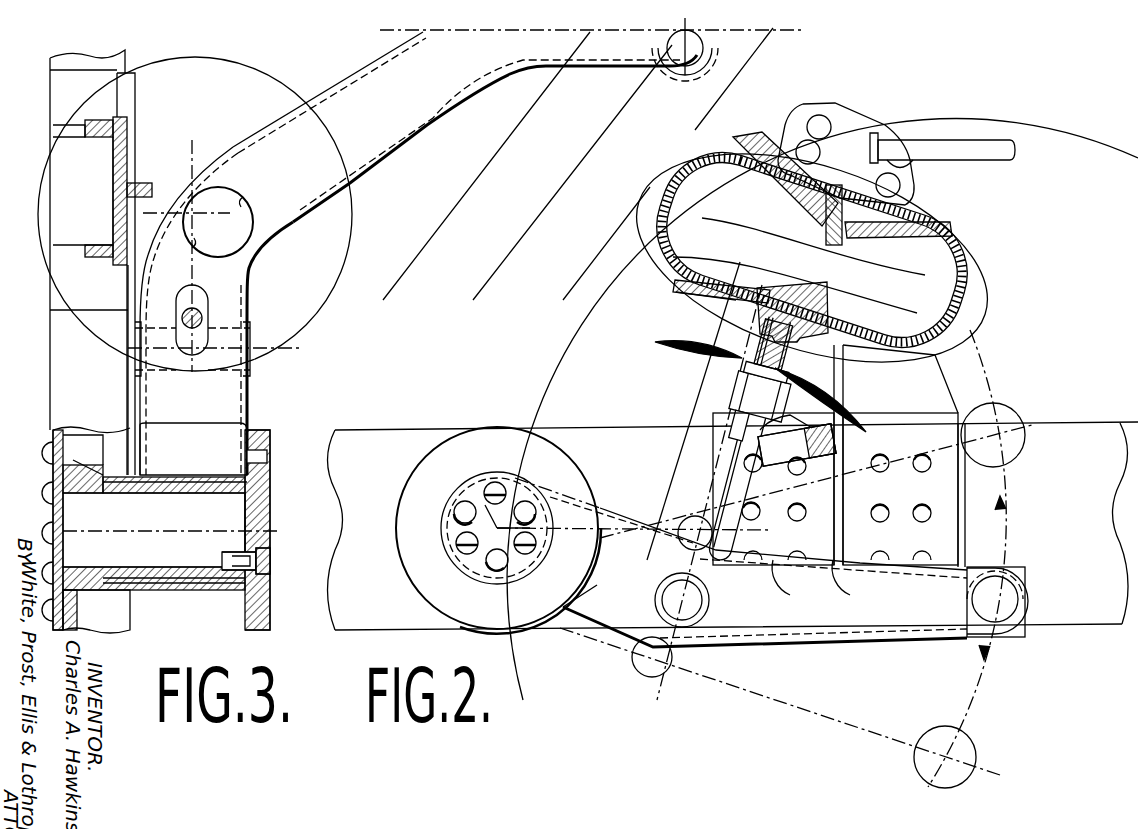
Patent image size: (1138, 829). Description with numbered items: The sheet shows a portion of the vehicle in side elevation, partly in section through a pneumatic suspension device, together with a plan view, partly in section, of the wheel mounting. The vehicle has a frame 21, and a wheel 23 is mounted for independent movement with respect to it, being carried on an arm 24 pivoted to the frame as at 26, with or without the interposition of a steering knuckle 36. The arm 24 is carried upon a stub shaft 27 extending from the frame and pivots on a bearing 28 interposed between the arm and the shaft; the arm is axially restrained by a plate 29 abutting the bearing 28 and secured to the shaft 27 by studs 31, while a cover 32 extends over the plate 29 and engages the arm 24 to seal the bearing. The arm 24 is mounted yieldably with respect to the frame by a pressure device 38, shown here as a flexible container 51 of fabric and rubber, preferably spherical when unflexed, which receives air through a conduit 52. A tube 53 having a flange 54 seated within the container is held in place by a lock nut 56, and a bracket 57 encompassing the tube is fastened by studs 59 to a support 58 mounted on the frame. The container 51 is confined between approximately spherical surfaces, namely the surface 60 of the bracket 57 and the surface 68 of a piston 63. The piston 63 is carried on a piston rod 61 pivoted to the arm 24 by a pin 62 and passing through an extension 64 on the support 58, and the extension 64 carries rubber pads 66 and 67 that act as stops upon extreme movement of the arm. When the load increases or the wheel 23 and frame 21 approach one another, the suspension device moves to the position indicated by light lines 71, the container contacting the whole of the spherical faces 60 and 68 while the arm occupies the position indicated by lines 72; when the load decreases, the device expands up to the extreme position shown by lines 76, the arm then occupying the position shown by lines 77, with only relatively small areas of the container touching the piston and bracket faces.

In FIG. 3, the frame 21 is at (55, 360).
In FIG. 2, the frame 21 is at (1085, 424).
In FIG. 2, the wheels 23 is at (414, 262).
In FIG. 2, the arms 24 is at (398, 128).
In FIG. 3, the pivot 26 is at (137, 592).
In FIG. 2, the pivot 26 is at (410, 585).
In FIG. 3, the stub shaft 27 is at (152, 570).
In FIG. 3, the bearing 28 is at (218, 592).
In FIG. 3, the plate 29 is at (245, 522).
In FIG. 3, the studs 31 is at (270, 560).
In FIG. 3, the cover 32 is at (268, 460).
In FIG. 2, the cover 32 is at (415, 512).
In FIG. 2, the steering knuckles 36 is at (1012, 568).
In FIG. 3, the pressure devices 38 is at (274, 59).
In FIG. 2, the pressure devices 38 is at (1018, 336).
In FIG. 2, the pressure device 51 is at (972, 240).
In FIG. 2, the conduit 52 is at (1000, 160).
In FIG. 2, the tube 53 is at (805, 214).
In FIG. 2, the flange 54 is at (842, 236).
In FIG. 2, the lock nut 56 is at (863, 183).
In FIG. 2, the bracket 57 is at (810, 106).
In FIG. 3, the support 58 is at (136, 108).
In FIG. 2, the support 58 is at (945, 368).
In FIG. 2, the studs 59 is at (818, 125).
In FIG. 2, the surface 60 is at (922, 220).
In FIG. 3, the piston rod 61 is at (202, 313).
In FIG. 2, the piston rod 61 is at (712, 496).
In FIG. 3, the pin 62 is at (250, 336).
In FIG. 2, the pin 62 is at (695, 603).
In FIG. 2, the piston 63 is at (680, 292).
In FIG. 2, the extension 64 is at (714, 385).
In FIG. 2, the rubber pad 66 is at (726, 372).
In FIG. 2, the rubber pad 67 is at (798, 466).
In FIG. 2, the surface 68 is at (722, 280).
In FIG. 2, the light lines 71 is at (912, 300).
In FIG. 2, the lines 72 is at (1008, 418).
In FIG. 2, the lines 76 is at (725, 346).
In FIG. 2, the lines 77 is at (976, 751).